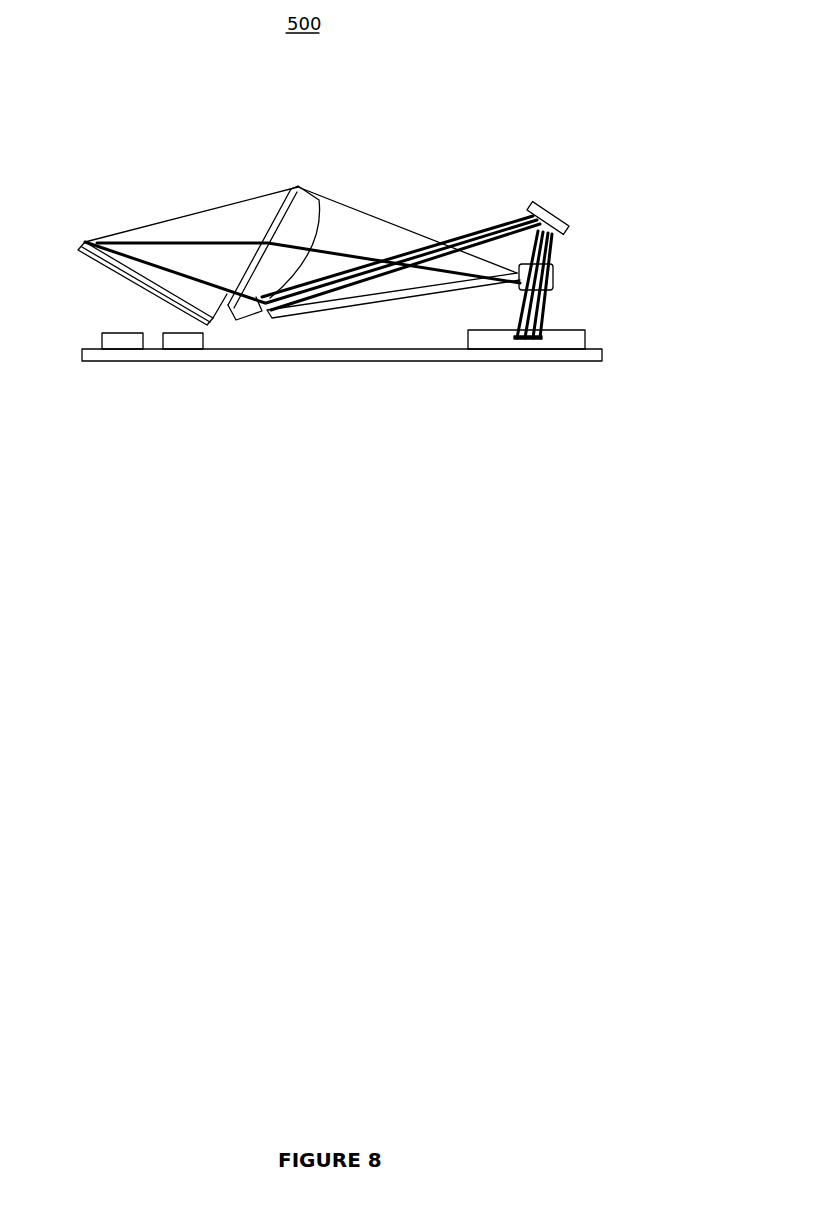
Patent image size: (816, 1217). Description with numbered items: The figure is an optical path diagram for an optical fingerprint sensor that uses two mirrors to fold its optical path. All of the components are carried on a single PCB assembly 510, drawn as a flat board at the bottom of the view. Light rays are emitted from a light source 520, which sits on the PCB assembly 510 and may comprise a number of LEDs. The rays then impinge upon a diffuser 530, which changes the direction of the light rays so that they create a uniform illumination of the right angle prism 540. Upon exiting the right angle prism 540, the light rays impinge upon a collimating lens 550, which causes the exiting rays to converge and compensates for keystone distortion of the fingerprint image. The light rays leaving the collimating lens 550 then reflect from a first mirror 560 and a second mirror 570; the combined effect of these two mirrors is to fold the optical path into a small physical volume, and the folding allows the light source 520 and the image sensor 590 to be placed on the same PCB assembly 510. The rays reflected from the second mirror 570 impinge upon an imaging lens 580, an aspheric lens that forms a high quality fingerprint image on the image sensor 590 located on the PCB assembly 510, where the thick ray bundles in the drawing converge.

The PCB assembly 510 is at (534, 363).
The light source 520 is at (178, 341).
The diffuser 530 is at (114, 275).
The right angle prism 540 is at (138, 227).
The collimating lens 550 is at (238, 318).
The first mirror 560 is at (351, 309).
The second mirror 570 is at (552, 212).
The imaging lens 580 is at (559, 276).
The image sensor 590 is at (588, 336).